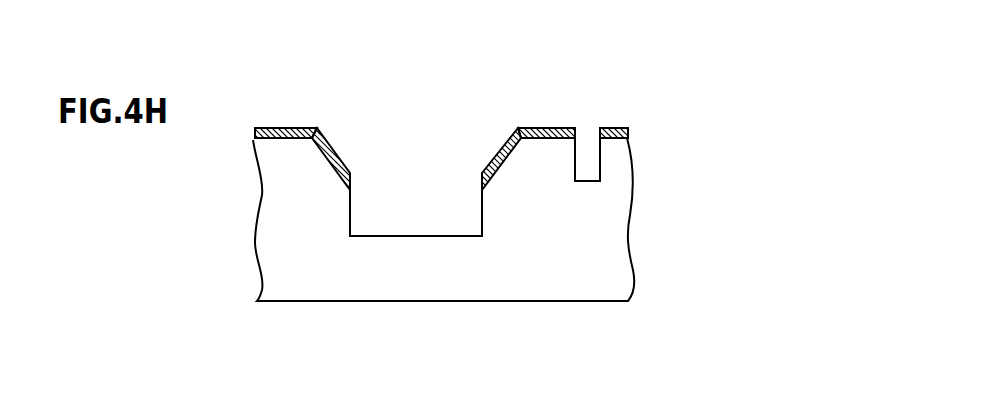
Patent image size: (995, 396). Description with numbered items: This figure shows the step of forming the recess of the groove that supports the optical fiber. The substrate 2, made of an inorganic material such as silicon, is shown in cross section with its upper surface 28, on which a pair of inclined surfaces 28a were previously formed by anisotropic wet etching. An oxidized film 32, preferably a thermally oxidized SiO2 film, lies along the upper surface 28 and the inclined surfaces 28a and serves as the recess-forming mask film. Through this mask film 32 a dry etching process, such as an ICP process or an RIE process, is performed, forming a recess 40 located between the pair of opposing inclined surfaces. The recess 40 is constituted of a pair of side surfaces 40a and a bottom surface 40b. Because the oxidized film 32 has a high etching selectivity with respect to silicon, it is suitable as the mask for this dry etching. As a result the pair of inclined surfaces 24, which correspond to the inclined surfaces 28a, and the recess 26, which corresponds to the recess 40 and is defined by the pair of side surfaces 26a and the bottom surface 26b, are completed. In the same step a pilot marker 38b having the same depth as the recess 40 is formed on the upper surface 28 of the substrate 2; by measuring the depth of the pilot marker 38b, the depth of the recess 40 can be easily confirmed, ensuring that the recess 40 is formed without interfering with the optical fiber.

The substrate 2 is at (608, 234).
The inclined surfaces 24 is at (472, 129).
The recess 26 is at (416, 190).
The side surfaces 26a is at (242, 204).
The bottom surface 26b is at (421, 290).
The upper surface 28 is at (545, 128).
The inclined surfaces 28a is at (500, 150).
The oxidized film 32 is at (617, 129).
The pilot marker 38b is at (598, 160).
The recess 40 is at (416, 228).
The side surfaces 40a is at (350, 219).
The bottom surface 40b is at (372, 236).